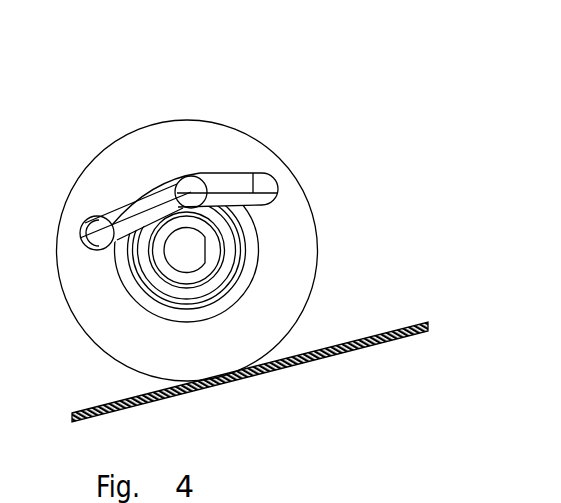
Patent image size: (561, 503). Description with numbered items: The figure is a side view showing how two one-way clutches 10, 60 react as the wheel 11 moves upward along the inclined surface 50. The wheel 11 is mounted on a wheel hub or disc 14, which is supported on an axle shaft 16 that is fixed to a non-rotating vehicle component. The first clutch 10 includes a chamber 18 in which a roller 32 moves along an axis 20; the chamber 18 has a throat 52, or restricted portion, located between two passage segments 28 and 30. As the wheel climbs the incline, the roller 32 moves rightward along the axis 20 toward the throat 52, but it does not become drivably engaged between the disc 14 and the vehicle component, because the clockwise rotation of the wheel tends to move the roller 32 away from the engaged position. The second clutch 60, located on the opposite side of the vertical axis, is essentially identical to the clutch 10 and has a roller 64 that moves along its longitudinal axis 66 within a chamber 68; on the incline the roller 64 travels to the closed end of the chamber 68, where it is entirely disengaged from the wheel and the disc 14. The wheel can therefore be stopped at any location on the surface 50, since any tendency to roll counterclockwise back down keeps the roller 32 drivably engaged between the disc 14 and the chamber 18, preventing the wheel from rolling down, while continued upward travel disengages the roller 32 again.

The one-way clutch 10 is at (190, 227).
The wheel 11 is at (302, 256).
The wheel hub or disc 14 is at (243, 274).
The axle shaft 16 is at (182, 257).
The chamber 18 is at (279, 174).
The axis 20 is at (254, 173).
The passage segment 28 is at (193, 188).
The passage segment 30 is at (172, 172).
The roller 32 is at (210, 174).
The inclined surface 50 is at (357, 343).
The throat 52 is at (177, 175).
The second one-way clutch 60 is at (171, 167).
The roller 64 is at (88, 222).
The longitudinal axis 66 is at (138, 198).
The chamber 68 is at (82, 232).